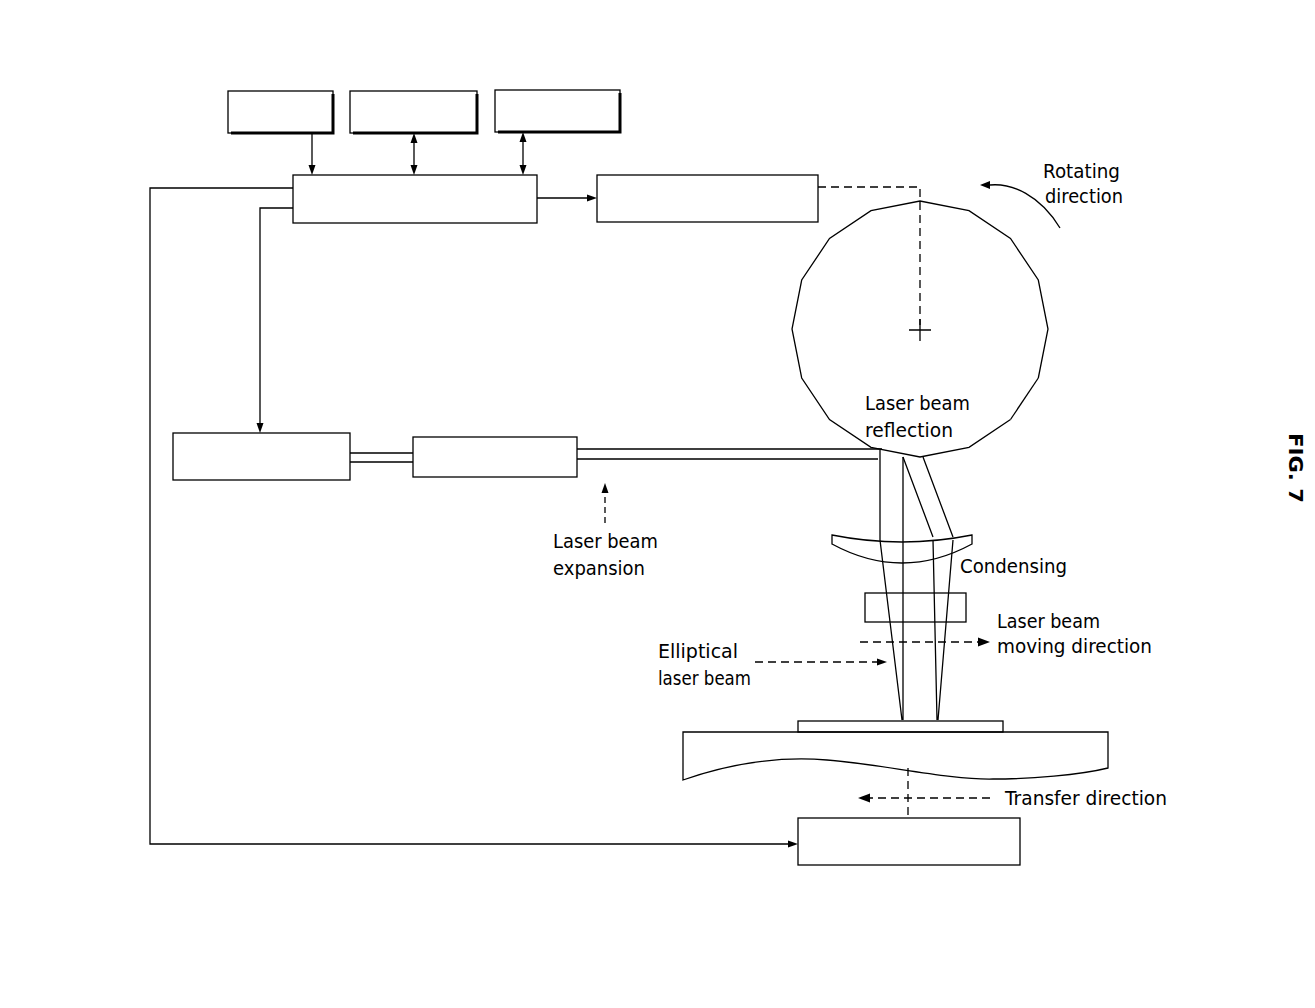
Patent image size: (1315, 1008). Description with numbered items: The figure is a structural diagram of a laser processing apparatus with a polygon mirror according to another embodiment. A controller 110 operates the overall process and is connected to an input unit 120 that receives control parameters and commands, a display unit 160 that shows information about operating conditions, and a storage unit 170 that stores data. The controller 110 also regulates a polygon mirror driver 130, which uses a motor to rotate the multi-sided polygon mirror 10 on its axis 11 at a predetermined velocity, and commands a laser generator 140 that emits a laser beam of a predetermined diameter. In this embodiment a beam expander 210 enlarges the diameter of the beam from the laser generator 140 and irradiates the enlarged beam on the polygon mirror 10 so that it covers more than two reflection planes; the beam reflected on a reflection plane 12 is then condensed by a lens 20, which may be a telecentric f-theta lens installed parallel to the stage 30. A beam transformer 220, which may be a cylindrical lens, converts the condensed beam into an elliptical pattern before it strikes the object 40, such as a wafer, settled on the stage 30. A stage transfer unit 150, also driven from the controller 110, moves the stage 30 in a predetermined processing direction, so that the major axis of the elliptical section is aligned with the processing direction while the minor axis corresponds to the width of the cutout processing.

The polygon mirror 10 is at (1078, 326).
The axis 11 is at (920, 329).
The reflection plane 12 is at (1028, 397).
The lens 20 is at (968, 533).
The stage 30 is at (1105, 747).
The object 40 is at (1004, 721).
The controller 110 is at (482, 223).
The input unit 120 is at (313, 91).
The polygon mirror driver 130 is at (768, 175).
The laser generator 140 is at (303, 433).
The stage transfer unit 150 is at (1022, 838).
The display unit 160 is at (460, 91).
The storage unit 170 is at (578, 90).
The beam expander 210 is at (507, 437).
The beam transformer 220 is at (865, 610).